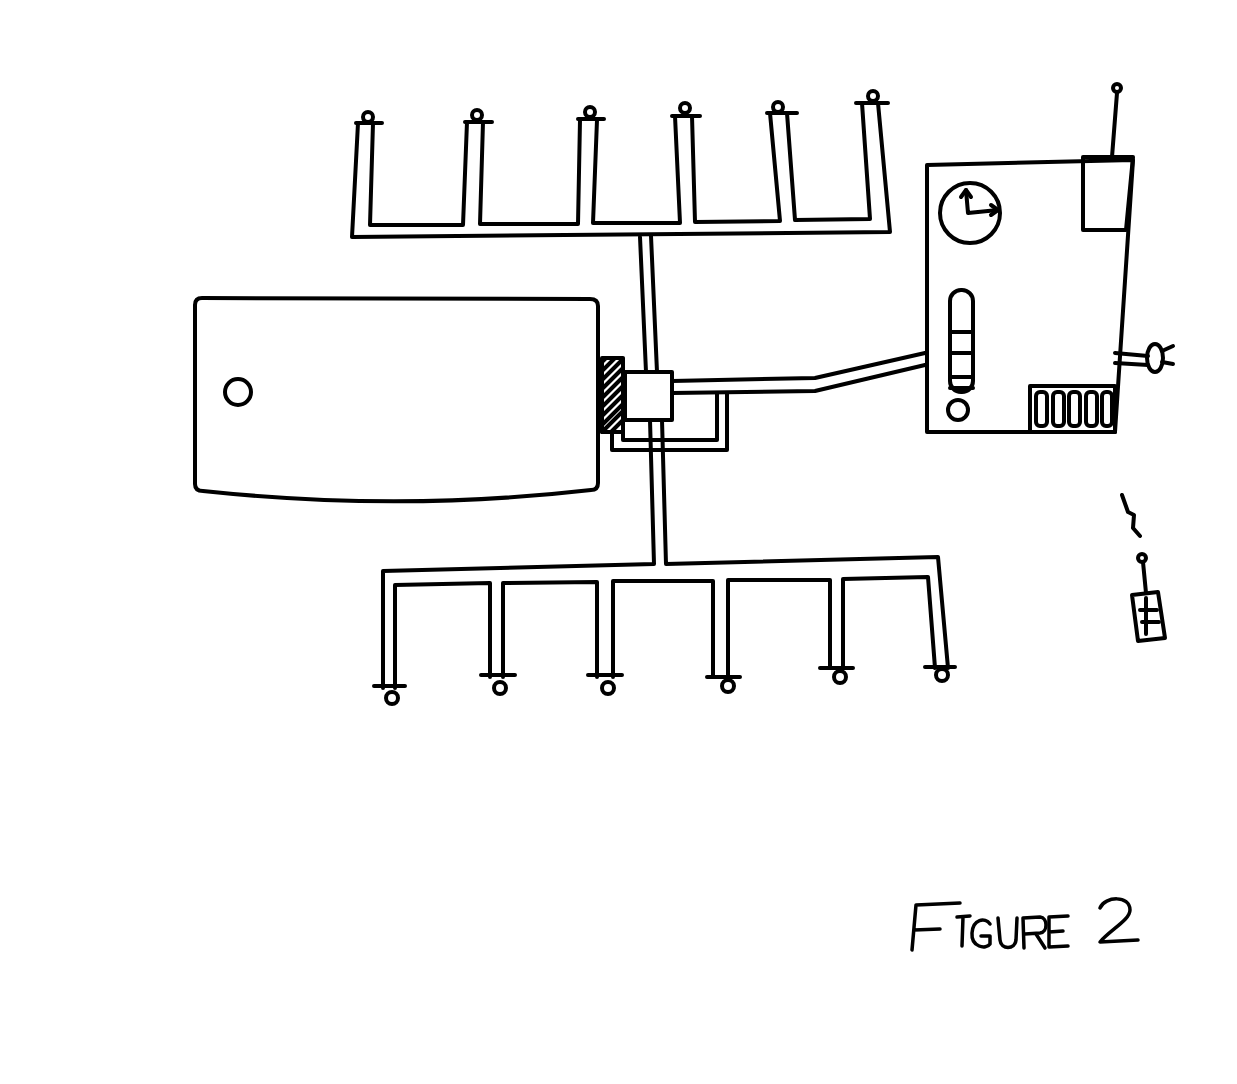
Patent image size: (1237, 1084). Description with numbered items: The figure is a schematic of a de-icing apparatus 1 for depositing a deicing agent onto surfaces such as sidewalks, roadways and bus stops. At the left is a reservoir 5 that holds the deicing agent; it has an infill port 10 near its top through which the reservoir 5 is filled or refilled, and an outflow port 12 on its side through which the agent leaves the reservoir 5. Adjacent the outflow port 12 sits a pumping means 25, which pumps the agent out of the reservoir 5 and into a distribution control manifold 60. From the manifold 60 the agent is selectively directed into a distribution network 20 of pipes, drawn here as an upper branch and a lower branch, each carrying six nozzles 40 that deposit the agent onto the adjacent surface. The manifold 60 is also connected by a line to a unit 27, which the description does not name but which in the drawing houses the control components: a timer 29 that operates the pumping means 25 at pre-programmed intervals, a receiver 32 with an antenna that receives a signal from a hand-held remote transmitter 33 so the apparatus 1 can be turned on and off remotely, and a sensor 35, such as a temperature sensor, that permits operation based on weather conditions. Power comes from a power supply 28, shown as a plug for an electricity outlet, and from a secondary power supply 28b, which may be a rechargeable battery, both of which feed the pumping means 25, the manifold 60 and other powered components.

The de-icing apparatus 1 is at (250, 232).
The reservoir 5 is at (232, 497).
The infill port 10 is at (258, 388).
The outflow port 12 is at (597, 395).
The distribution network 20 is at (605, 197).
The pumping means 25 is at (613, 355).
The controller 27 is at (919, 300).
The power supply 28 is at (1139, 342).
The secondary power supply 28b is at (1070, 437).
The timer 29 is at (965, 168).
The receiver 32 is at (1097, 150).
The remote transmitter 33 is at (1168, 600).
The sensor 35 is at (957, 420).
The nozzle 40 is at (478, 104).
The distribution control manifold 60 is at (676, 373).